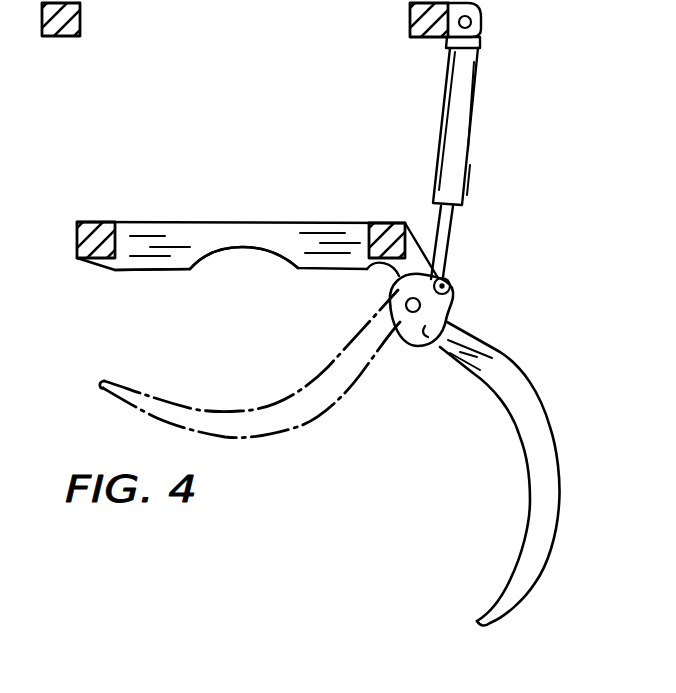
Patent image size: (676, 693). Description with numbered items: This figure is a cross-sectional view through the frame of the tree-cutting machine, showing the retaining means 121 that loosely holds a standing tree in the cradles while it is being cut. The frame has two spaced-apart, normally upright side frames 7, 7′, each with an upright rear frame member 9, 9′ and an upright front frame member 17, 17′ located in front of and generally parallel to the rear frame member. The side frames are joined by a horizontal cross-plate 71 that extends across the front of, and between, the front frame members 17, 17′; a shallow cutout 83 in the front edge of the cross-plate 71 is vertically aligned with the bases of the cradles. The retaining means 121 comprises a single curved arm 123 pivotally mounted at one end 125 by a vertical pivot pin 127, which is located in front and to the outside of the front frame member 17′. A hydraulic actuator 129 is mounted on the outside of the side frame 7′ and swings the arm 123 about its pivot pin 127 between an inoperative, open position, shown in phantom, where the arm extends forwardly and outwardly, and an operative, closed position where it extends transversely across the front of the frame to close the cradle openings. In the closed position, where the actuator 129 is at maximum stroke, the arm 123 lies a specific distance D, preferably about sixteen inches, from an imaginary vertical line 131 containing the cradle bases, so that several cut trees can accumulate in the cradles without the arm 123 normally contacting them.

The side frame 7 is at (70, 42).
The side frame 7′ is at (427, 43).
The rear frame member 9 is at (82, 18).
The rear frame member 9′ is at (408, 27).
The front frame member 17 is at (133, 221).
The front frame member 17′ is at (362, 222).
The cross-plate 71 is at (213, 220).
The cutout 83 is at (259, 253).
The retaining means 121 is at (548, 376).
The curved arm 123 is at (558, 467).
The end 125 is at (377, 273).
The pivot pin 127 is at (388, 321).
The hydraulic actuator 129 is at (470, 164).
The imaginary vertical line 131 is at (232, 255).
The distance D is at (240, 262).